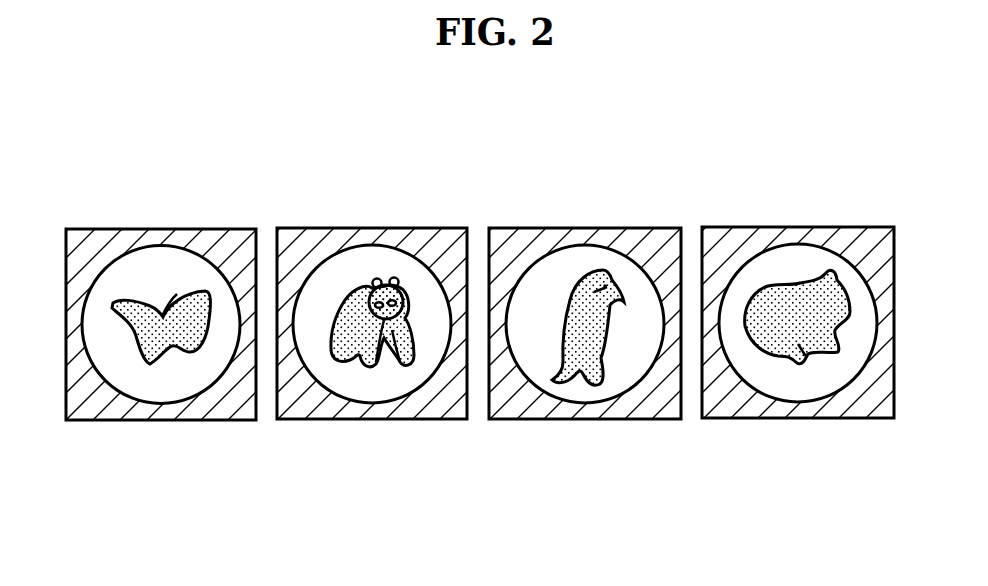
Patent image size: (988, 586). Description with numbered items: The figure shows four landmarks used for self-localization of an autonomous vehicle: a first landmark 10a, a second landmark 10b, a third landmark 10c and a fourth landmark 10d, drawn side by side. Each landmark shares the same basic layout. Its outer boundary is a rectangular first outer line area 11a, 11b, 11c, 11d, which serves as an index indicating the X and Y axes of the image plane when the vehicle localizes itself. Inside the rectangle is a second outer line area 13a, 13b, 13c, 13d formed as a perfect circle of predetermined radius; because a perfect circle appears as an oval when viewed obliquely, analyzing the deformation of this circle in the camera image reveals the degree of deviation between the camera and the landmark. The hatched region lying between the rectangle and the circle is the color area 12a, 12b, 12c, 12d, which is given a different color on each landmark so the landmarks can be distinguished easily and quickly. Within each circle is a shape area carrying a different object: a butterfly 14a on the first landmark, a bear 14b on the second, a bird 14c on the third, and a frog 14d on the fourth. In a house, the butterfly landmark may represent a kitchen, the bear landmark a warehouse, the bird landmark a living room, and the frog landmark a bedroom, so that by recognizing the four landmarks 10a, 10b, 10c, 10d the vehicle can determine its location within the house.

The first landmark 10a is at (228, 212).
The second landmark 10b is at (439, 212).
The third landmark 10c is at (649, 212).
The fourth landmark 10d is at (861, 212).
The first outer line area 11a is at (93, 422).
The first outer line area 11b is at (304, 421).
The first outer line area 11c is at (516, 421).
The first outer line area 11d is at (728, 420).
The color area 12a is at (218, 413).
The color area 12b is at (429, 412).
The color area 12c is at (642, 412).
The color area 12d is at (855, 411).
The second outer line area 13a is at (159, 246).
The second outer line area 13b is at (371, 246).
The second outer line area 13c is at (586, 246).
The second outer line area 13d is at (797, 245).
The butterfly 14a is at (148, 365).
The bear 14b is at (363, 366).
The bird 14c is at (581, 370).
The frog 14d is at (785, 360).